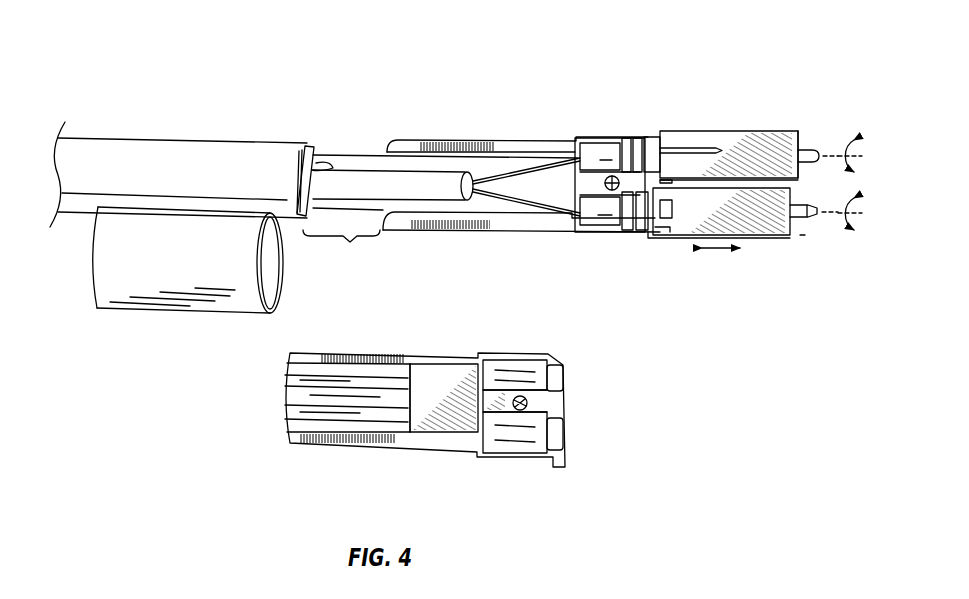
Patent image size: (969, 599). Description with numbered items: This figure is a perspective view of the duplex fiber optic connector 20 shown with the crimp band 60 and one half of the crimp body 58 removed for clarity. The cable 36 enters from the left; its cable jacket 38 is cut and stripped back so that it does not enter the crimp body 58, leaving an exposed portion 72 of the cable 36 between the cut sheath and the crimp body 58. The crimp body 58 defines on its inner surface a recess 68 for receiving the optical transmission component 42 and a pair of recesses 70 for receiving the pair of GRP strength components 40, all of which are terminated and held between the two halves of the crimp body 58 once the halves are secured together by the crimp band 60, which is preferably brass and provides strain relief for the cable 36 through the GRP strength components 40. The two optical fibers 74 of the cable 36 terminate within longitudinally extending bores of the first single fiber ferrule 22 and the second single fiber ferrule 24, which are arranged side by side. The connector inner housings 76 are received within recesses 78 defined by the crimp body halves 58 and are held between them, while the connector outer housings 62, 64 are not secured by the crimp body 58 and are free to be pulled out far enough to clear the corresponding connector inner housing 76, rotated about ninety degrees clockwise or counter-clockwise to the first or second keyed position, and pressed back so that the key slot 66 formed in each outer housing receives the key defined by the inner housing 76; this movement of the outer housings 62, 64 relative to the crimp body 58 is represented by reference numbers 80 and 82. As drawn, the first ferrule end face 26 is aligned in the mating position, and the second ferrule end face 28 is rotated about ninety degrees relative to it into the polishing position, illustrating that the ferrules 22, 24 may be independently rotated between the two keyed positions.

The duplex fiber optic connector 20 is at (301, 80).
The first single fiber ferrule 22 is at (803, 236).
The second single fiber ferrule 24 is at (815, 143).
The first ferrule end face 26 is at (810, 242).
The second ferrule end face 28 is at (818, 140).
The cable 36 is at (100, 136).
The cable jacket 38 is at (163, 154).
The GRP strength components 40 is at (355, 195).
The optical transmission component 42 is at (400, 178).
The crimp body 58 is at (460, 140).
The crimp band 60 is at (148, 310).
The connector outer housing 62 is at (677, 240).
The connector outer housing 64 is at (733, 131).
The key slot 66 is at (668, 226).
The recess 68 is at (307, 400).
The recesses 70 is at (395, 392).
The exposed portion 72 is at (341, 250).
The optical fibers 74 is at (543, 196).
The connector inner housings 76 is at (612, 198).
The recesses 78 is at (507, 438).
The movement of the outer housings 80 is at (724, 255).
The movement of the outer housings 82 is at (853, 198).